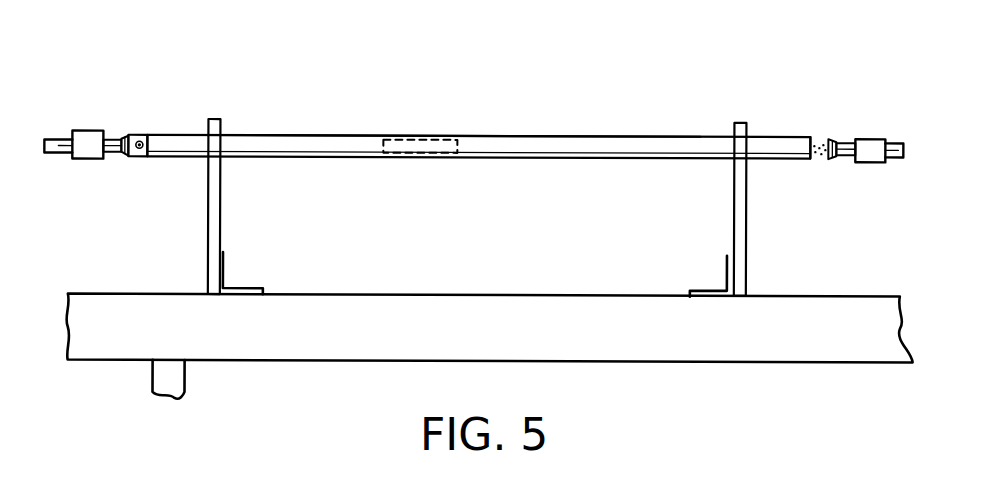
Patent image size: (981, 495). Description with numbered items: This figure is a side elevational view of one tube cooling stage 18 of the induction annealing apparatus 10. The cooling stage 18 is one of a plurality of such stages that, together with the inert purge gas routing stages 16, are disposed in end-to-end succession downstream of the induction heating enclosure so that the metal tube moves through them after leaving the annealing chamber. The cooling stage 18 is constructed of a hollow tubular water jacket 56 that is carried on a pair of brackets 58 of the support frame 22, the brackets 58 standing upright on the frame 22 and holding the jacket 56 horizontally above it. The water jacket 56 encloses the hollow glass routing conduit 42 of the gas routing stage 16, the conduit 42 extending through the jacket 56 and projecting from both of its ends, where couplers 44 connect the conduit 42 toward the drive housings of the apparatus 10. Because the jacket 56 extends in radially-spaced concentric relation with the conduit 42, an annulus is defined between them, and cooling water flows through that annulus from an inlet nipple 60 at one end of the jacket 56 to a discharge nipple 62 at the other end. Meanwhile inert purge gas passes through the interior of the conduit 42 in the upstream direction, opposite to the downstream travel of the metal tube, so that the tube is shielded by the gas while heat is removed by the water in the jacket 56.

The induction annealing apparatus 10 is at (658, 100).
The inert purge gas routing stage 16 is at (431, 139).
The tube cooling stage 18 is at (282, 136).
The support frame 22 is at (399, 295).
The glass conduit 42 is at (109, 139).
The coupler 44 is at (89, 132).
The water jacket 56 is at (348, 136).
The bracket 58 is at (208, 247).
The inlet nipple 60 is at (803, 141).
The discharge nipple 62 is at (141, 141).